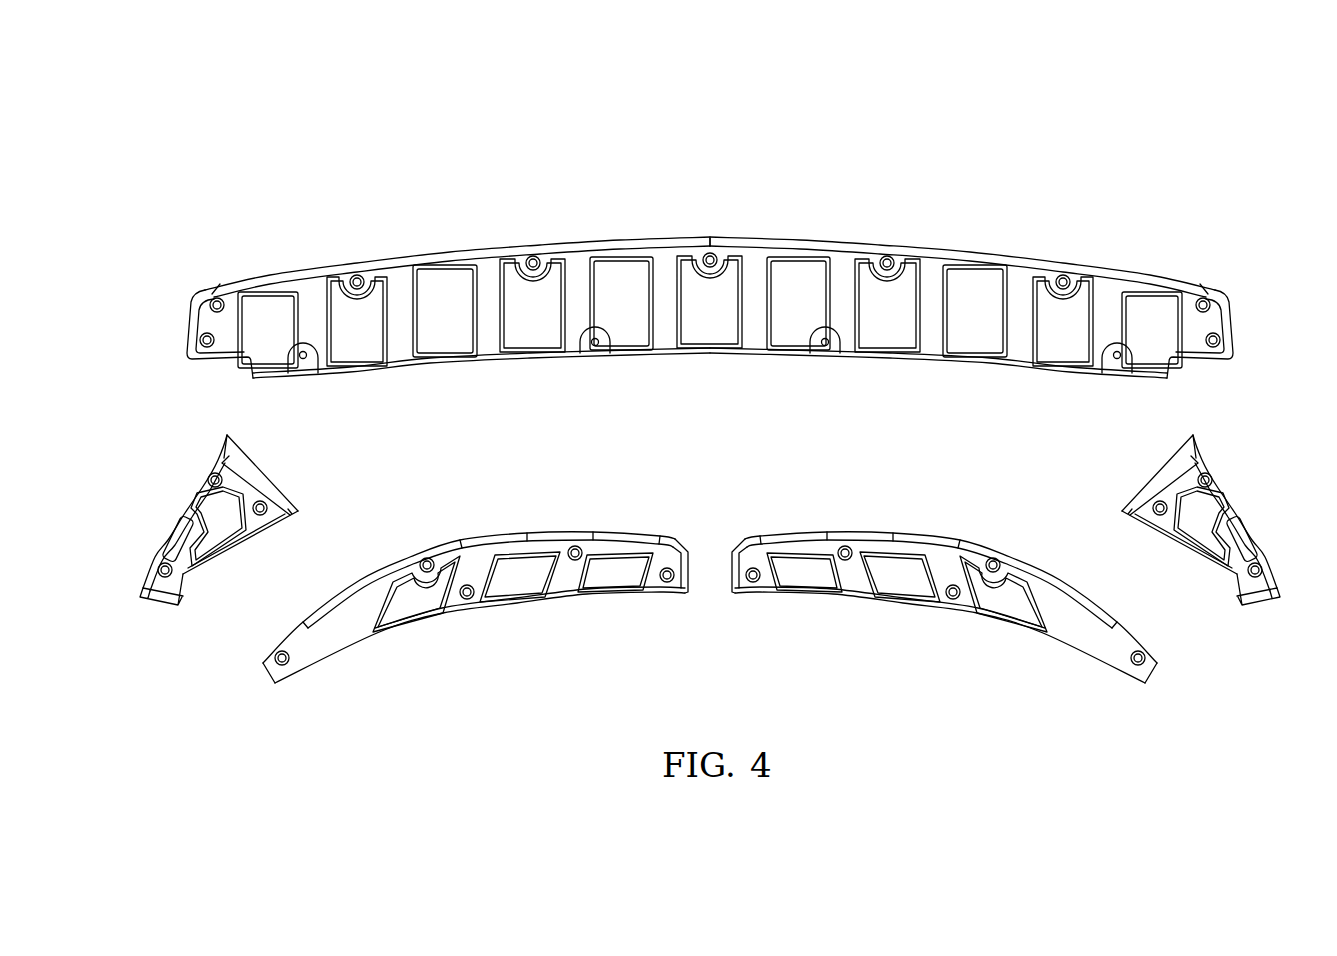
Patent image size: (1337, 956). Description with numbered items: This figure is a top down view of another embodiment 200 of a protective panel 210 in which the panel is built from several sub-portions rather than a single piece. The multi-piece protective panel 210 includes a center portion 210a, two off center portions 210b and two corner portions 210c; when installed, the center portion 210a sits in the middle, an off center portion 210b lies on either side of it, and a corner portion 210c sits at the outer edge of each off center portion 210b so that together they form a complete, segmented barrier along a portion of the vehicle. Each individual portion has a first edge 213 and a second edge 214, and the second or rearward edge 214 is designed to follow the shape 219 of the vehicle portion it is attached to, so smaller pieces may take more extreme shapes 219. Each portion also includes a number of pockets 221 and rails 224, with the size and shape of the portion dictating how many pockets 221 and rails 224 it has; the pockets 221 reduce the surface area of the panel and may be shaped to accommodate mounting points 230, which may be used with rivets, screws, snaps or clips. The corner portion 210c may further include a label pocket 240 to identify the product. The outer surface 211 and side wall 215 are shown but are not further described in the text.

The embodiment 200 is at (687, 56).
The protective panel 210 is at (427, 150).
The center portion 210a is at (614, 212).
The off center portion 210b is at (421, 659).
The corner portion 210c is at (178, 467).
The outer curved surface 211 is at (340, 621).
The first edge 213 is at (762, 239).
The second edge 214 is at (705, 357).
The side wall 215 is at (508, 604).
The shape 219 is at (201, 285).
The pocket 221 is at (977, 331).
The rail 224 is at (932, 286).
The mounting point 230 is at (354, 277).
The label pocket 240 is at (1244, 539).